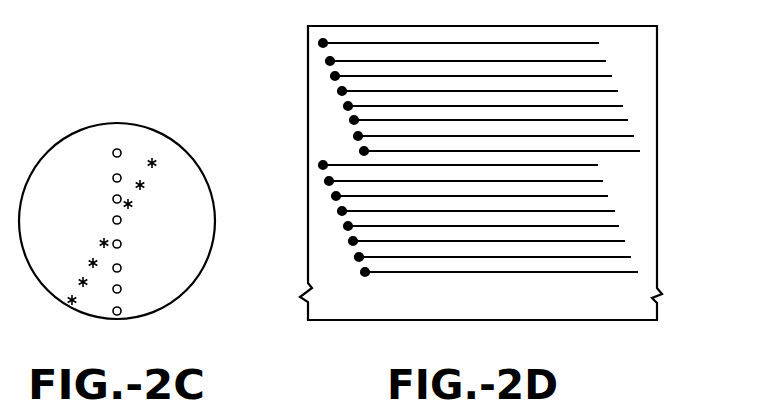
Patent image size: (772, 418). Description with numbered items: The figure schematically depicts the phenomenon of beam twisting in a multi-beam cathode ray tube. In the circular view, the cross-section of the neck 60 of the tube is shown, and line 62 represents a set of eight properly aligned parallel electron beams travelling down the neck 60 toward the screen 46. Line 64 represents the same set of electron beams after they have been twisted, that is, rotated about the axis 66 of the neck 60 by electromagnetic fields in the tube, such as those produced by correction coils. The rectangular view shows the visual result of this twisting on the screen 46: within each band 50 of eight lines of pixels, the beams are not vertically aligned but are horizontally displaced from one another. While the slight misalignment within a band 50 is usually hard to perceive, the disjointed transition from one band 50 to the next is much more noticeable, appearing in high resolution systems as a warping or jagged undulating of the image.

In FIG. 2D, the screen 46 is at (318, 118).
In FIG. 2D, the band 50 is at (620, 193).
In FIG. 2C, the neck 60 is at (197, 183).
In FIG. 2C, the line 62 is at (119, 140).
In FIG. 2C, the line 64 is at (160, 158).
In FIG. 2C, the axis 66 is at (121, 220).